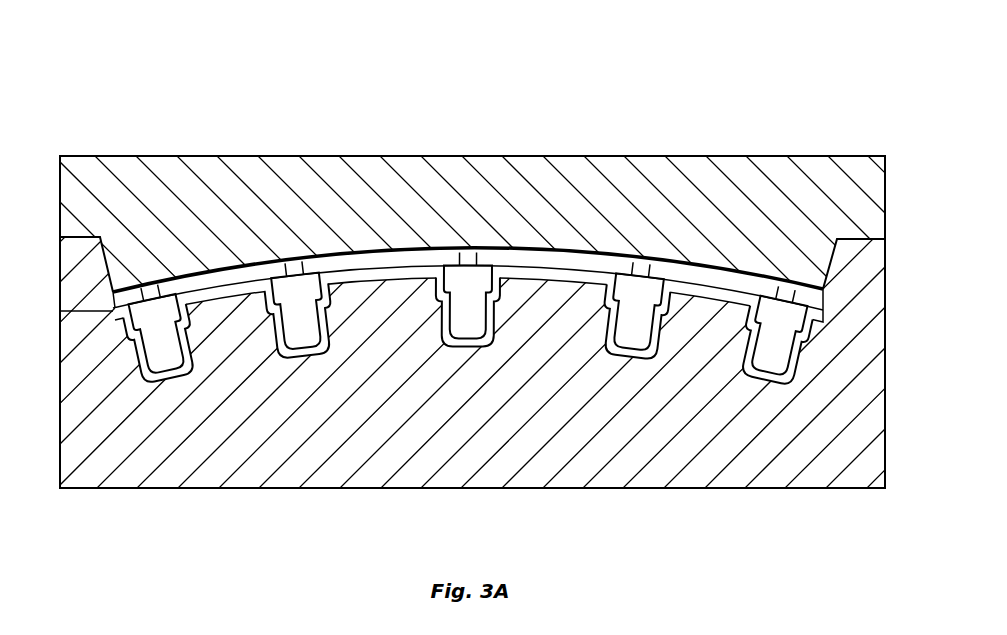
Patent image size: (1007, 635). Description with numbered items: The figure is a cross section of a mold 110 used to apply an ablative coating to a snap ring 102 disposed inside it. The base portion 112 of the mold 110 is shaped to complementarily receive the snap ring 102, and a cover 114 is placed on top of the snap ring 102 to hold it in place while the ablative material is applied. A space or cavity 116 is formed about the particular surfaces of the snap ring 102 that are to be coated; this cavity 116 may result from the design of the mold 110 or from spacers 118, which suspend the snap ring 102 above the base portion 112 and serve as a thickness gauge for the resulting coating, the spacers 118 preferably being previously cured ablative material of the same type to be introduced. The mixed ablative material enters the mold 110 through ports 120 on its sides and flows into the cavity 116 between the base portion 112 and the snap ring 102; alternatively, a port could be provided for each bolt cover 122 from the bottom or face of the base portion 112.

The mold 110 is at (503, 290).
The cover 114 is at (180, 156).
The base portion 112 is at (609, 488).
The snap ring 102 is at (402, 247).
The spacers 118 is at (577, 277).
The bolt cover 122 is at (498, 268).
The space or cavity 116 is at (764, 377).
The ports 120 is at (60, 311).